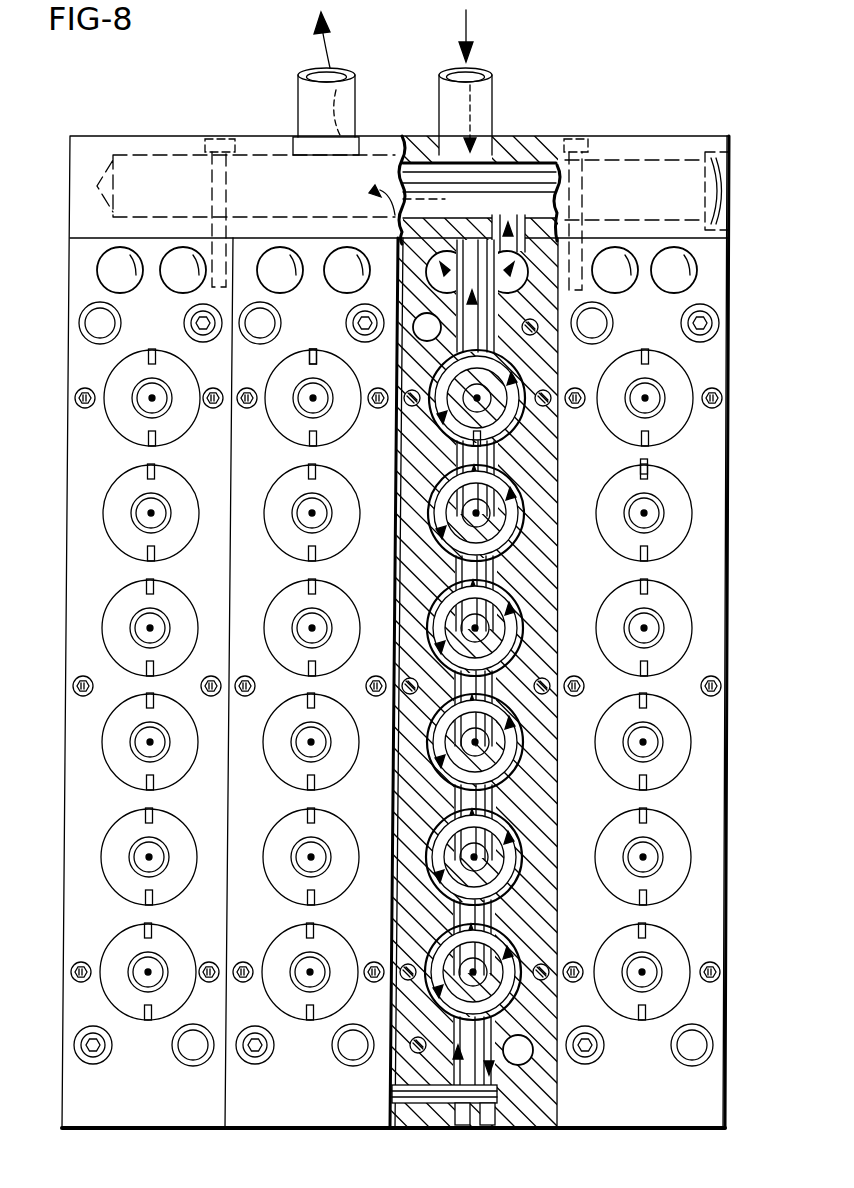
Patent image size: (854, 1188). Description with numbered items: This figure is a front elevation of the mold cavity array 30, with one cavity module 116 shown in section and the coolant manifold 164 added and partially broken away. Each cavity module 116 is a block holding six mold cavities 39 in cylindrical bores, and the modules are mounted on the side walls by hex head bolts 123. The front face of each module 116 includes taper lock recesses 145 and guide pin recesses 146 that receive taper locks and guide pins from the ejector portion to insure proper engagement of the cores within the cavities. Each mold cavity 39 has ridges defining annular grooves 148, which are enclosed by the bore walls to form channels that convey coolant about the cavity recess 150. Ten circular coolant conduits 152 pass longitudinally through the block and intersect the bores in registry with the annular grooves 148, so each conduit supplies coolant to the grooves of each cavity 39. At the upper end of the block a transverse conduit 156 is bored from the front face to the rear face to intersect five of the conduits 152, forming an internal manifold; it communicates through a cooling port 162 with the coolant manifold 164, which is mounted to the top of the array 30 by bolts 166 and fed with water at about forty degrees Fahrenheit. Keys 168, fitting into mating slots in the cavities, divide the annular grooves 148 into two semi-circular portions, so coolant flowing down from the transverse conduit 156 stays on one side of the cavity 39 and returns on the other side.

The mold cavity array 30 is at (66, 371).
The mold cavity 39 is at (130, 423).
The cavity module 116 is at (372, 243).
The hex head bolt 123 is at (712, 406).
The taper lock recess 145 is at (729, 338).
The guide pin recess 146 is at (96, 325).
The annular groove 148 is at (579, 409).
The cavity recess 150 is at (462, 405).
The coolant conduit 152 is at (482, 322).
The transverse conduit 156 is at (530, 278).
The cooling port 162 is at (548, 262).
The coolant manifold 164 is at (672, 178).
The bolt 166 is at (222, 140).
The key 168 is at (314, 355).